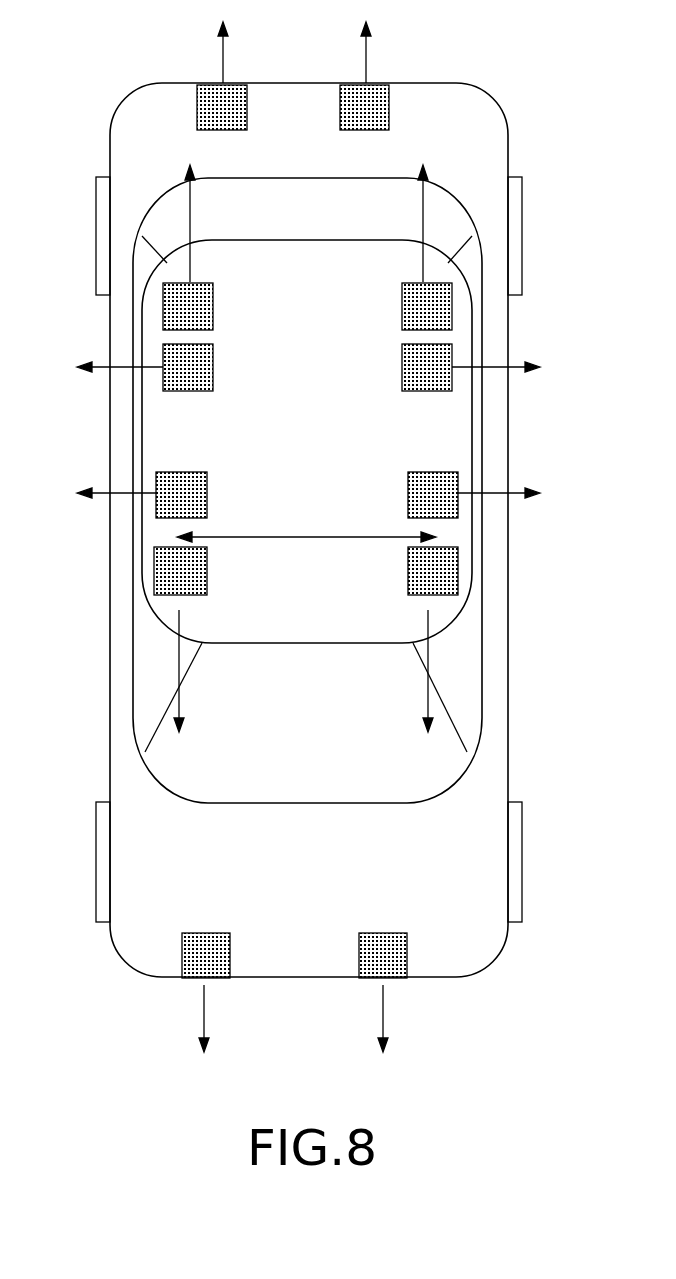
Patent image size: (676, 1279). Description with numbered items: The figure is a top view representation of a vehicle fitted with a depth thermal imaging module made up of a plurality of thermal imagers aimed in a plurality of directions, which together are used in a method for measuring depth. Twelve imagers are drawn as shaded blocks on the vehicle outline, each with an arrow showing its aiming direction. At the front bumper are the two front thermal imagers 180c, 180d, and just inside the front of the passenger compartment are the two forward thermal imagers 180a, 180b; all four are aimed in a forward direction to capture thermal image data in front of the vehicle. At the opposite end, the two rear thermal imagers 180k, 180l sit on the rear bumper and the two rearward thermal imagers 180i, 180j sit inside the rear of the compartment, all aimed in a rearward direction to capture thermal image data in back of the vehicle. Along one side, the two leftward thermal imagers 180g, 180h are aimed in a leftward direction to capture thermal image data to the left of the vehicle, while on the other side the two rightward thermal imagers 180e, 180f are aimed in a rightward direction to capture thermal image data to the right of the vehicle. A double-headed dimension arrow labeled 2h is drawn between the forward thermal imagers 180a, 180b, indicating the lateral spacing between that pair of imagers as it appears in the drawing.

The forward thermal imager 180a is at (212, 639).
The forward thermal imager 180b is at (400, 639).
The front thermal imager 180c is at (207, 971).
The front thermal imager 180d is at (386, 969).
The rightward thermal imager 180e is at (182, 495).
The rightward thermal imager 180f is at (184, 367).
The leftward thermal imager 180g is at (431, 495).
The leftward thermal imager 180h is at (431, 367).
The rearward thermal imager 180i is at (225, 247).
The rearward thermal imager 180j is at (390, 247).
The rear thermal imager 180k is at (235, 97).
The rear thermal imager 180l is at (368, 97).
The sensor spacing distance 2h is at (306, 524).